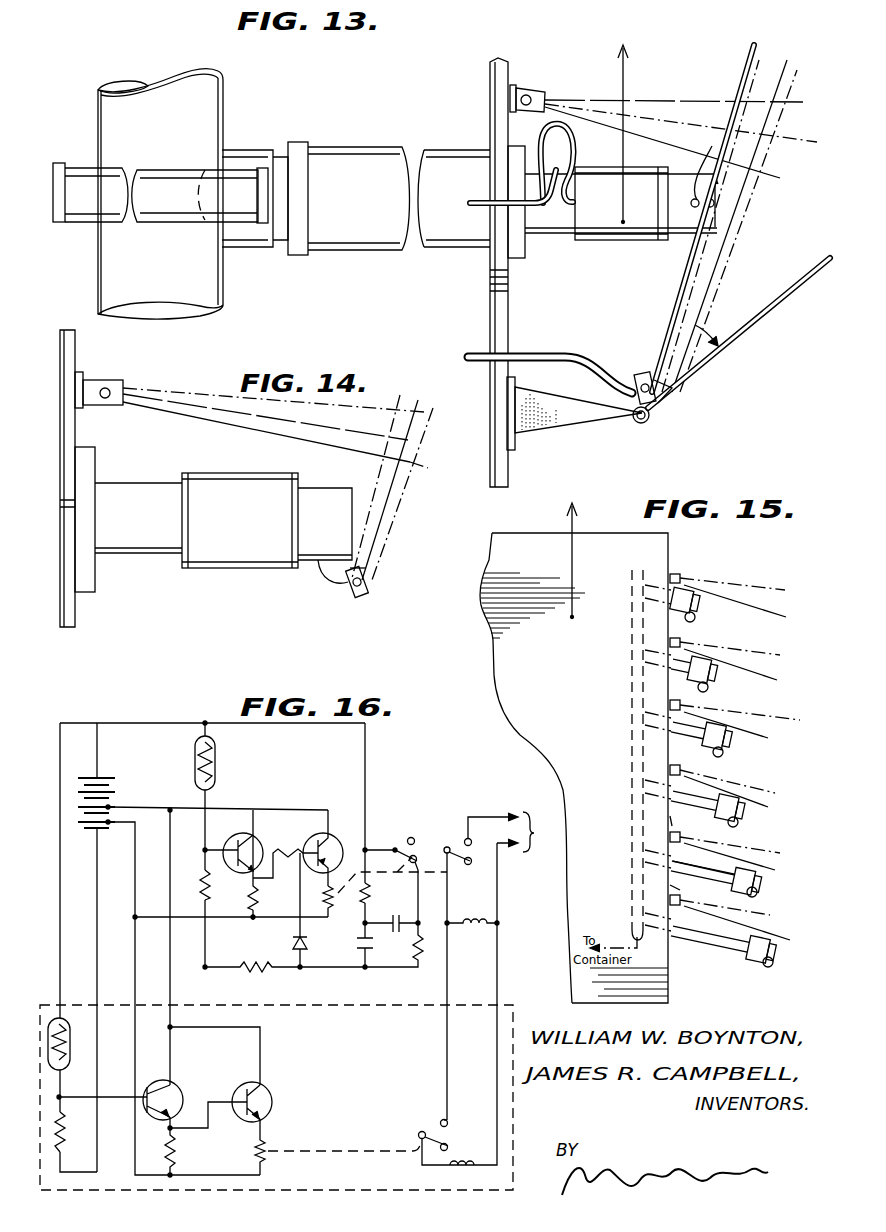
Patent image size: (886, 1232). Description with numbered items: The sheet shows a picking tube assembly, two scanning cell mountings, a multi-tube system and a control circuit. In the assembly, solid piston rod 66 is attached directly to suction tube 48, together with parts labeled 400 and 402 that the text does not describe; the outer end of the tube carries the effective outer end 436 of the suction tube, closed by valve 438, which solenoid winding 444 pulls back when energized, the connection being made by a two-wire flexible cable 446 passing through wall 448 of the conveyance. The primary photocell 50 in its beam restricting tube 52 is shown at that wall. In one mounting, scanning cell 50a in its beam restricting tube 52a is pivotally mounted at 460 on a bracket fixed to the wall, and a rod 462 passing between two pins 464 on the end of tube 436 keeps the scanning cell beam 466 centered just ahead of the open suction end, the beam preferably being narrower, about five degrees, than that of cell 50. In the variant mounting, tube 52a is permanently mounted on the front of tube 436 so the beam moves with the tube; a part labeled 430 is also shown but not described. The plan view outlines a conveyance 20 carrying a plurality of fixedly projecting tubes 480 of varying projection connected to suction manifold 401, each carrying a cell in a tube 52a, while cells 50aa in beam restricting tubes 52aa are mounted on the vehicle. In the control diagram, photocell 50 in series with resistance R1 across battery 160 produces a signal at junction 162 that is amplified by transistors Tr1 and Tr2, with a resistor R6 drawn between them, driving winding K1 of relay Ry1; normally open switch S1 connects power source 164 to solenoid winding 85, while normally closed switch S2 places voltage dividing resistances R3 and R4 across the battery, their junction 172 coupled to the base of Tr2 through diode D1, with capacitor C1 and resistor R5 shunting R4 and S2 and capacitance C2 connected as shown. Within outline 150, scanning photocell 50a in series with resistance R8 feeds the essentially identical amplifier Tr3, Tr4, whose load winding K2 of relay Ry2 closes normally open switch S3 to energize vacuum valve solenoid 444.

In FIG. 13, the cylinder 400 is at (170, 286).
In FIG. 13, the solid piston rod 66 is at (173, 170).
In FIG. 13, the cylinder 402 is at (368, 197).
In FIG. 13, the wall 448 is at (502, 316).
In FIG. 14, the wall 448 is at (76, 627).
In FIG. 13, the suction tube 48 is at (552, 236).
In FIG. 14, the suction tube 48 is at (153, 555).
In FIG. 13, the effective outer end of the suction tube 436 is at (686, 178).
In FIG. 14, the effective outer end of the suction tube 436 is at (330, 526).
In FIG. 13, the valve 438 is at (604, 161).
In FIG. 13, the two-wire flexible cable 446 is at (479, 210).
In FIG. 13, the photocell 50 is at (529, 93).
In FIG. 14, the photocell 50 is at (108, 382).
In FIG. 16, the photocell 50 is at (217, 764).
In FIG. 13, the beam restricting tube 52 is at (546, 96).
In FIG. 14, the beam restricting tube 52 is at (122, 407).
In FIG. 13, the pins 464 is at (710, 160).
In FIG. 13, the rod 462 is at (750, 293).
In FIG. 13, the scanning cell beam 466 is at (716, 240).
In FIG. 14, the scanning cell beam 466 is at (385, 513).
In FIG. 13, the pivot 460 is at (650, 421).
In FIG. 13, the scanning cell 50a is at (642, 372).
In FIG. 14, the scanning cell 50a is at (368, 580).
In FIG. 16, the scanning cell 50a is at (48, 1043).
In FIG. 13, the beam restricting tube 52a is at (670, 396).
In FIG. 14, the beam restricting tube 52a is at (352, 598).
In FIG. 15, the beam restricting tube 52a is at (696, 617).
In FIG. 14, the light unit 430 is at (252, 521).
In FIG. 15, the light unit 430 is at (689, 590).
In FIG. 15, the conveyance 20 is at (580, 718).
In FIG. 15, the suction manifold 401 is at (627, 815).
In FIG. 15, the beam restricting tubes 52aa is at (668, 821).
In FIG. 15, the cells 50aa is at (668, 890).
In FIG. 15, the tubes 480 is at (700, 870).
In FIG. 16, the battery 160 is at (130, 795).
In FIG. 16, the junction 162 is at (205, 850).
In FIG. 16, the transistor Tr1 is at (242, 845).
In FIG. 16, the transistor Tr2 is at (327, 848).
In FIG. 16, the transistor Tr3 is at (168, 1095).
In FIG. 16, the transistor Tr4 is at (258, 1096).
In FIG. 16, the resistance R1 is at (218, 885).
In FIG. 16, the voltage dividing resistance R3 is at (258, 965).
In FIG. 16, the voltage dividing resistance R4 is at (394, 945).
In FIG. 16, the resistor R5 is at (378, 890).
In FIG. 16, the resistor R6 is at (285, 851).
In FIG. 16, the resistance R8 is at (74, 1132).
In FIG. 16, the capacitor C1 is at (356, 938).
In FIG. 16, the capacitance C2 is at (393, 914).
In FIG. 16, the diode D1 is at (313, 946).
In FIG. 16, the winding of relay Ry1 K1 is at (320, 900).
In FIG. 16, the winding of relay Ry2 K2 is at (247, 1147).
In FIG. 16, the normally open switch S1 is at (477, 968).
In FIG. 16, the normally closed switch S2 is at (391, 866).
In FIG. 16, the normally open relay switch S3 is at (429, 1125).
In FIG. 16, the relay Ry1 is at (444, 813).
In FIG. 16, the relay Ry2 is at (286, 1134).
In FIG. 16, the solenoid winding 85 is at (464, 932).
In FIG. 16, the power source 164 is at (538, 832).
In FIG. 16, the junction 172 is at (323, 968).
In FIG. 16, the circuitry 150 is at (516, 1114).
In FIG. 16, the solenoid winding 444 is at (470, 1160).